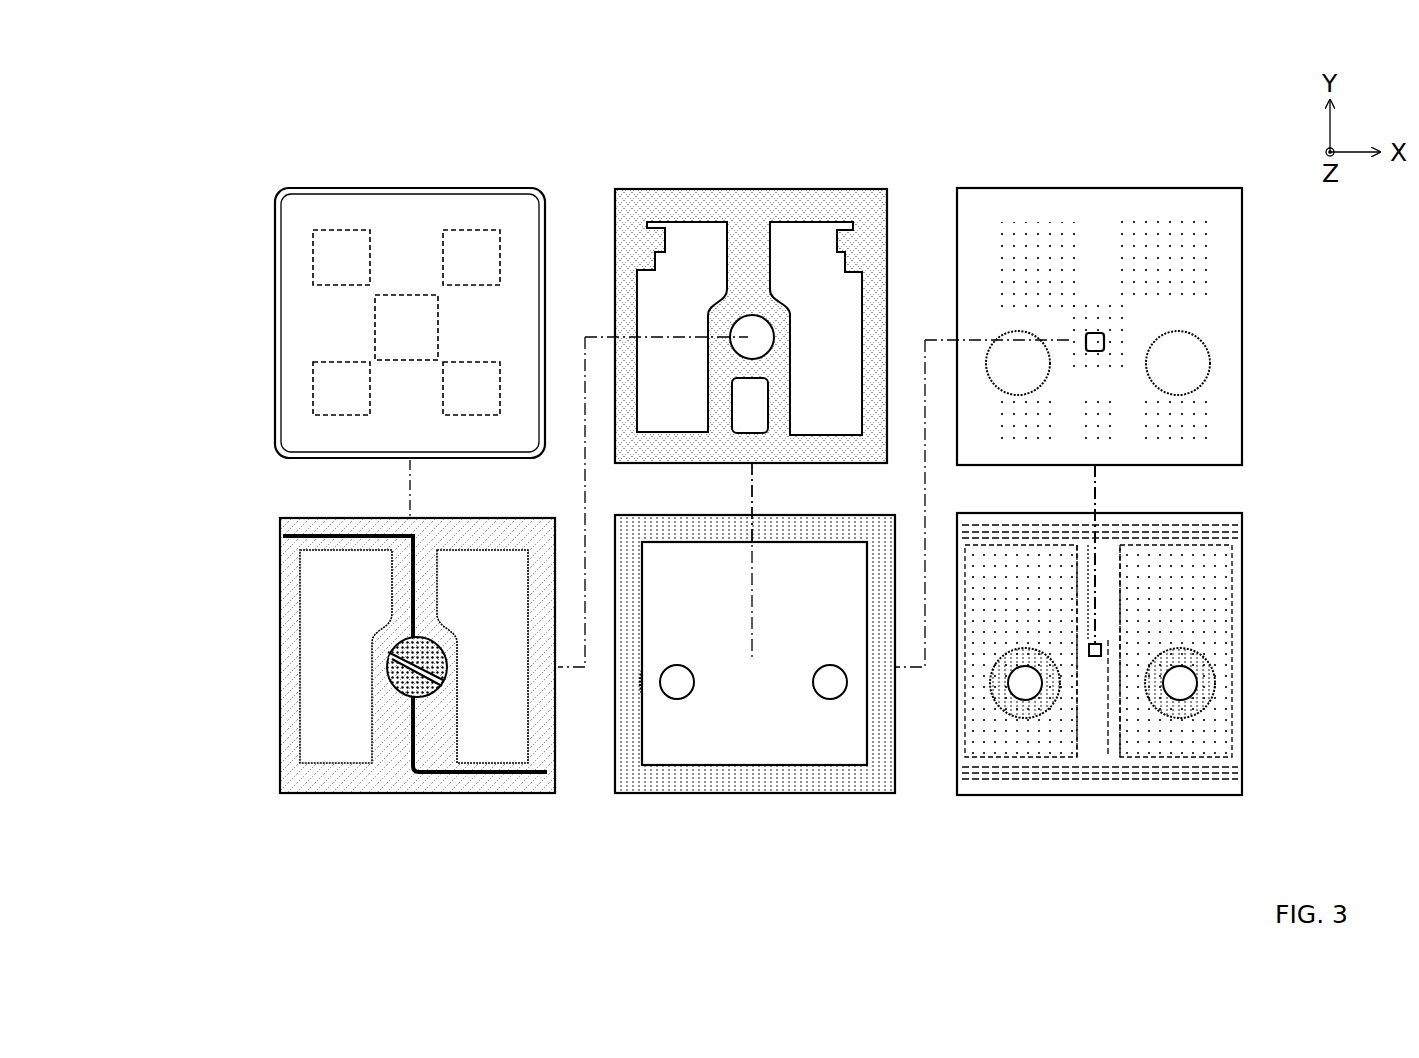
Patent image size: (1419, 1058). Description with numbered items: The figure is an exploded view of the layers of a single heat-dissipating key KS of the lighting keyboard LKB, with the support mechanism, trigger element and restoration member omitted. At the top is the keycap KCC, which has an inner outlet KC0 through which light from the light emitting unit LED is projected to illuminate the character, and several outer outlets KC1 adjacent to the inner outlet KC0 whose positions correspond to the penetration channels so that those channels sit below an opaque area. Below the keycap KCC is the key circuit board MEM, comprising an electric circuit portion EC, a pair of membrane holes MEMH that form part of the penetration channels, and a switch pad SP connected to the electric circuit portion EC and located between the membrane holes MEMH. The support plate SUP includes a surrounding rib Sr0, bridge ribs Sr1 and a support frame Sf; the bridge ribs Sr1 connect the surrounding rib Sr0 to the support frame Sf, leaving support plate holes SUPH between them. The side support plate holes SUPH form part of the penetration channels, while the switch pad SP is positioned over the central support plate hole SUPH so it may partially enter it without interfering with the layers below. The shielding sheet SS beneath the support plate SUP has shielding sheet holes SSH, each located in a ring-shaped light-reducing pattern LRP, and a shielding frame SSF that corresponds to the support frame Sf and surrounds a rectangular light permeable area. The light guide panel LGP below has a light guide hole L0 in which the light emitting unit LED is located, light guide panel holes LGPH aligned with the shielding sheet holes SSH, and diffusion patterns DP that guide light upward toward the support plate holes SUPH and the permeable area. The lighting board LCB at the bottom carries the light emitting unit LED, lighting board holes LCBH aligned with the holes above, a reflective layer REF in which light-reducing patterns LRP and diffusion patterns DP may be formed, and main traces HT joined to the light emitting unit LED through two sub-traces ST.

The heat-dissipating key KS is at (467, 170).
The keycap KCC is at (275, 255).
The outer outlet KC1 is at (465, 233).
The inner outlet KC0 is at (375, 322).
The lighting keyboard LKB is at (750, 128).
The support plate SUP is at (708, 189).
The support plate hole SUPH is at (817, 413).
The bridge rib Sr1 is at (720, 407).
The surrounding rib Sr0 is at (725, 308).
The support frame Sf is at (862, 246).
The light guide panel LGP is at (1242, 246).
The diffusion pattern DP is at (1090, 310).
The light guide panel hole LGPH is at (1185, 368).
The light guide hole L0 is at (1085, 340).
The lighting board LCB is at (1197, 793).
The main trace HT is at (1195, 525).
The sub-trace ST is at (1087, 580).
The light emitting unit LED is at (1113, 665).
The reflective layer REF is at (1113, 668).
The light-reducing pattern LRP is at (1143, 698).
The lighting board hole LCBH is at (1178, 685).
The key circuit board MEM is at (280, 578).
The membrane hole MEMH is at (470, 741).
The electric circuit portion EC is at (335, 537).
The switch pad SP is at (390, 683).
The shielding sheet SS is at (830, 793).
The shielding frame SSF is at (623, 735).
The shielding sheet hole SSH is at (830, 682).